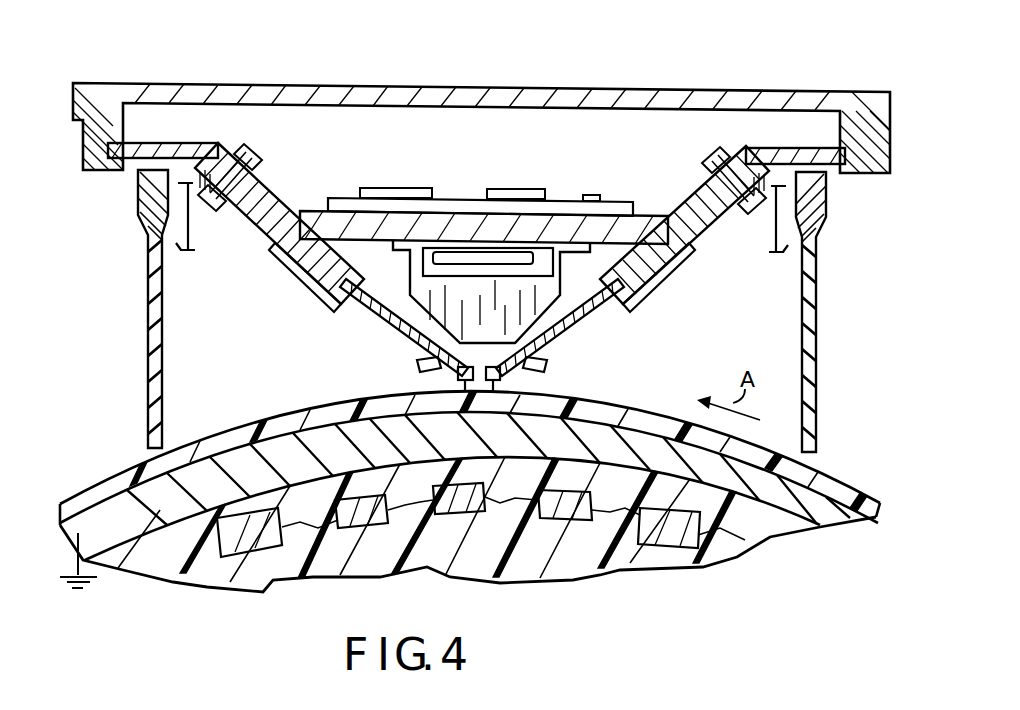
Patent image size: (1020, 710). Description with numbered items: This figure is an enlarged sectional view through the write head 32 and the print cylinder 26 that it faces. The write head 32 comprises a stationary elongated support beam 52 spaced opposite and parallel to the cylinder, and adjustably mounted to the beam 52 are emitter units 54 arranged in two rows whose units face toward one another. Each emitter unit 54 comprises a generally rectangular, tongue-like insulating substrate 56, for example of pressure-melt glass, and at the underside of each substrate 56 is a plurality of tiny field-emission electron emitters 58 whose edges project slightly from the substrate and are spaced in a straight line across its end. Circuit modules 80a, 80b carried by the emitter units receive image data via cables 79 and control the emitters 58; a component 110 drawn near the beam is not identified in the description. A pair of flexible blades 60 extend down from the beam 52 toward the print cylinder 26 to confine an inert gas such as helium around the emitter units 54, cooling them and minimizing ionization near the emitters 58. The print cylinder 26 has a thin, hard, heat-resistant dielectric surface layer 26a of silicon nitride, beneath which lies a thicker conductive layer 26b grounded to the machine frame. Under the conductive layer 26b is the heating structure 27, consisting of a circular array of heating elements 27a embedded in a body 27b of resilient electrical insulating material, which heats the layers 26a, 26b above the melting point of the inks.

The write head 32 is at (153, 75).
The support beam 52 is at (667, 215).
The emitter unit 54 is at (266, 292).
The insulating substrate 56 is at (380, 320).
The field-emission electron emitter 58 is at (463, 400).
The flexible blade 60 is at (148, 352).
The cable 79 is at (195, 235).
The circuit module 80a is at (318, 292).
The circuit module 80b is at (420, 364).
The circuit board 110 is at (449, 197).
The print cylinder 26 is at (103, 468).
The surface layer 26a is at (222, 432).
The conductive layer 26b is at (822, 510).
The inserts 27 is at (742, 583).
The heating element 27a is at (573, 522).
The body of resilient electrical insulating material 27b is at (676, 558).